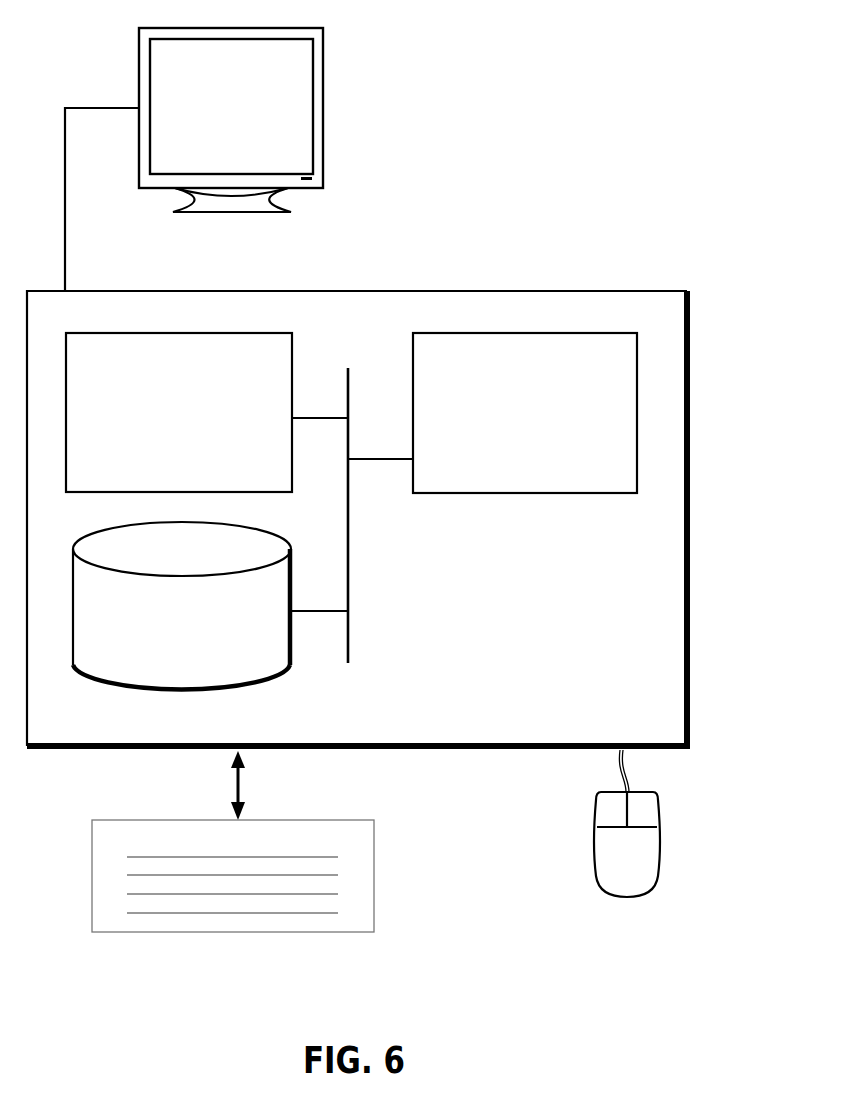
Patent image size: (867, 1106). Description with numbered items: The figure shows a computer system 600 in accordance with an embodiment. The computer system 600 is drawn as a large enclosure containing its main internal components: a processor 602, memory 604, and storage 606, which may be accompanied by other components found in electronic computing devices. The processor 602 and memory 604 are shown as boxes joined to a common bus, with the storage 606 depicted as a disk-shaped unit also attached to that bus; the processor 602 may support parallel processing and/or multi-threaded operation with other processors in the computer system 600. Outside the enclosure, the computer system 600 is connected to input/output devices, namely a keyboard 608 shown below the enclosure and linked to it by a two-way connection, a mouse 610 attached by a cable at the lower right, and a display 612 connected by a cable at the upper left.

The computer system 600 is at (403, 258).
The processor 602 is at (550, 426).
The memory 604 is at (158, 424).
The storage 606 is at (164, 636).
The keyboard 608 is at (233, 857).
The mouse 610 is at (606, 867).
The display 612 is at (231, 133).